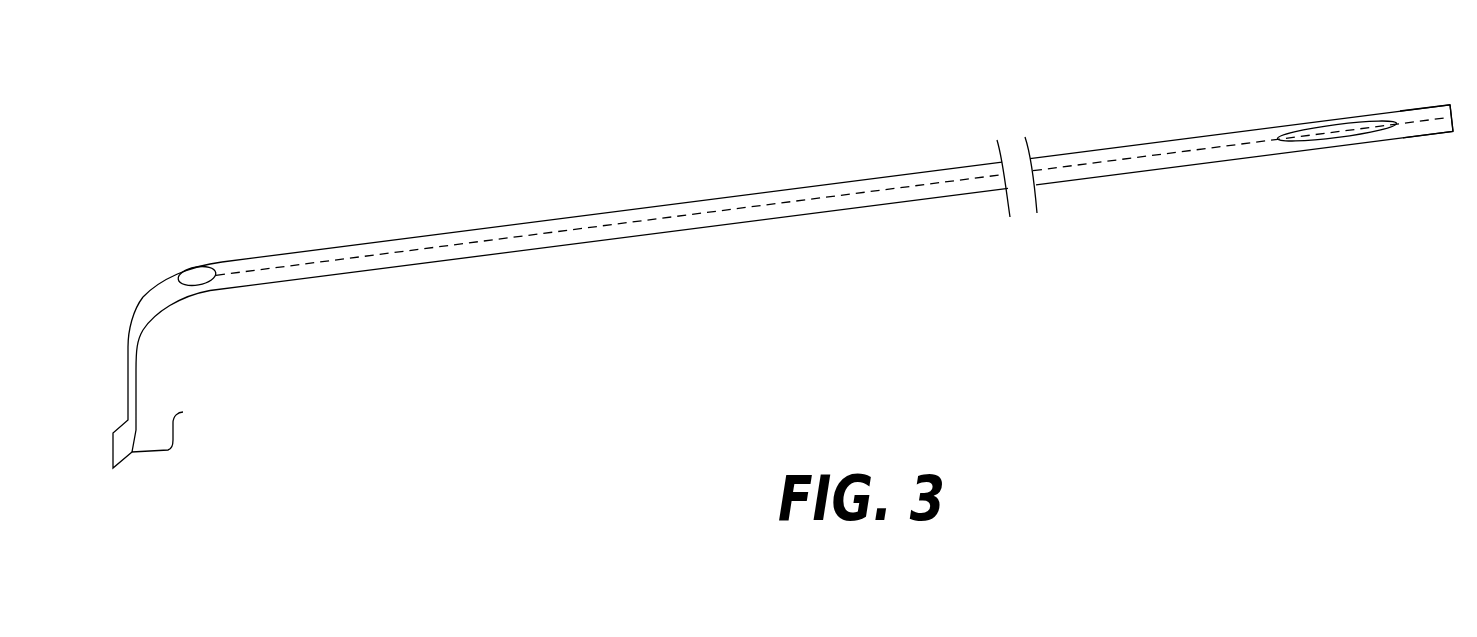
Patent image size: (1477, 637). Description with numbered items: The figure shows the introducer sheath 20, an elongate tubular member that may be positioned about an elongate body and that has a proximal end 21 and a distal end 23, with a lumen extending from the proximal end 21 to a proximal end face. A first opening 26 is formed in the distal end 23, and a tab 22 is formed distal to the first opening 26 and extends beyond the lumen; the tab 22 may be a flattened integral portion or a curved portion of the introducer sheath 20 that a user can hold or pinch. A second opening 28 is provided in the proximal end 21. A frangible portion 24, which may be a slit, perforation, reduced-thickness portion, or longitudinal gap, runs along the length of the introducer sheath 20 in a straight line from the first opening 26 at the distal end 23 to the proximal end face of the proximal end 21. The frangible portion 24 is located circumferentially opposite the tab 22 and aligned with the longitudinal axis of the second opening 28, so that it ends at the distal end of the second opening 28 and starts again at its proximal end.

The introducer sheath 20 is at (783, 242).
The proximal end 21 is at (1427, 153).
The tab 22 is at (183, 412).
The distal end 23 is at (213, 316).
The frangible portion 24 is at (802, 200).
The first opening 26 is at (203, 273).
The second opening 28 is at (1315, 123).